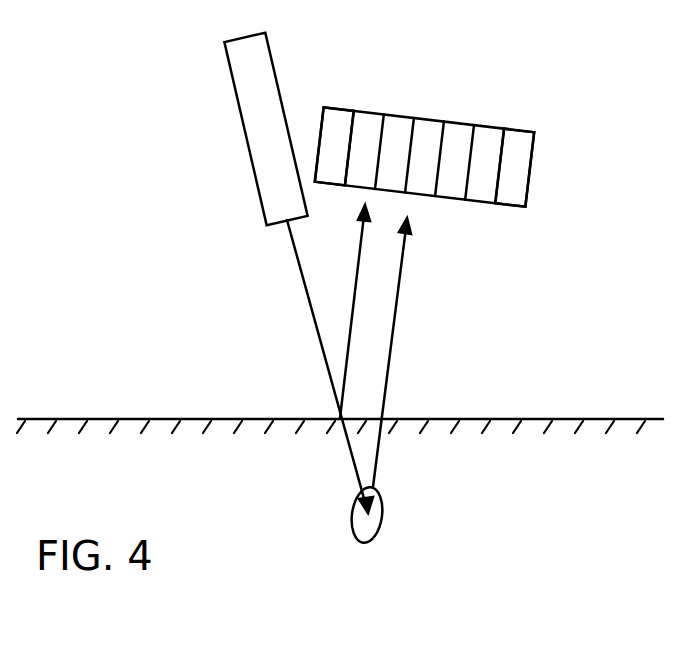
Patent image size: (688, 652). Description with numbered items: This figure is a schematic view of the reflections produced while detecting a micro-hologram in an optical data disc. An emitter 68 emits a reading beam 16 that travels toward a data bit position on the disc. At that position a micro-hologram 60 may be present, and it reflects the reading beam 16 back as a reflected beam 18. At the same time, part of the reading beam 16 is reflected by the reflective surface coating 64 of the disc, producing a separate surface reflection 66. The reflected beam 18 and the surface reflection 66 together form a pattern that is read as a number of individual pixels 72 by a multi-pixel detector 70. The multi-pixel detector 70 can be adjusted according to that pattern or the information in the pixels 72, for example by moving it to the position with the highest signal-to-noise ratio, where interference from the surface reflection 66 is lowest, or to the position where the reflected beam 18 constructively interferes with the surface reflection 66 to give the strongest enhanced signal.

The reading beam 16 is at (325, 363).
The reflected beam 18 is at (388, 372).
The micro-hologram 60 is at (371, 532).
The reflective surface coating 64 is at (334, 421).
The surface reflection 66 is at (352, 318).
The emitter 68 is at (242, 37).
The multi-pixel detector 70 is at (540, 180).
The pixels 72 is at (372, 108).